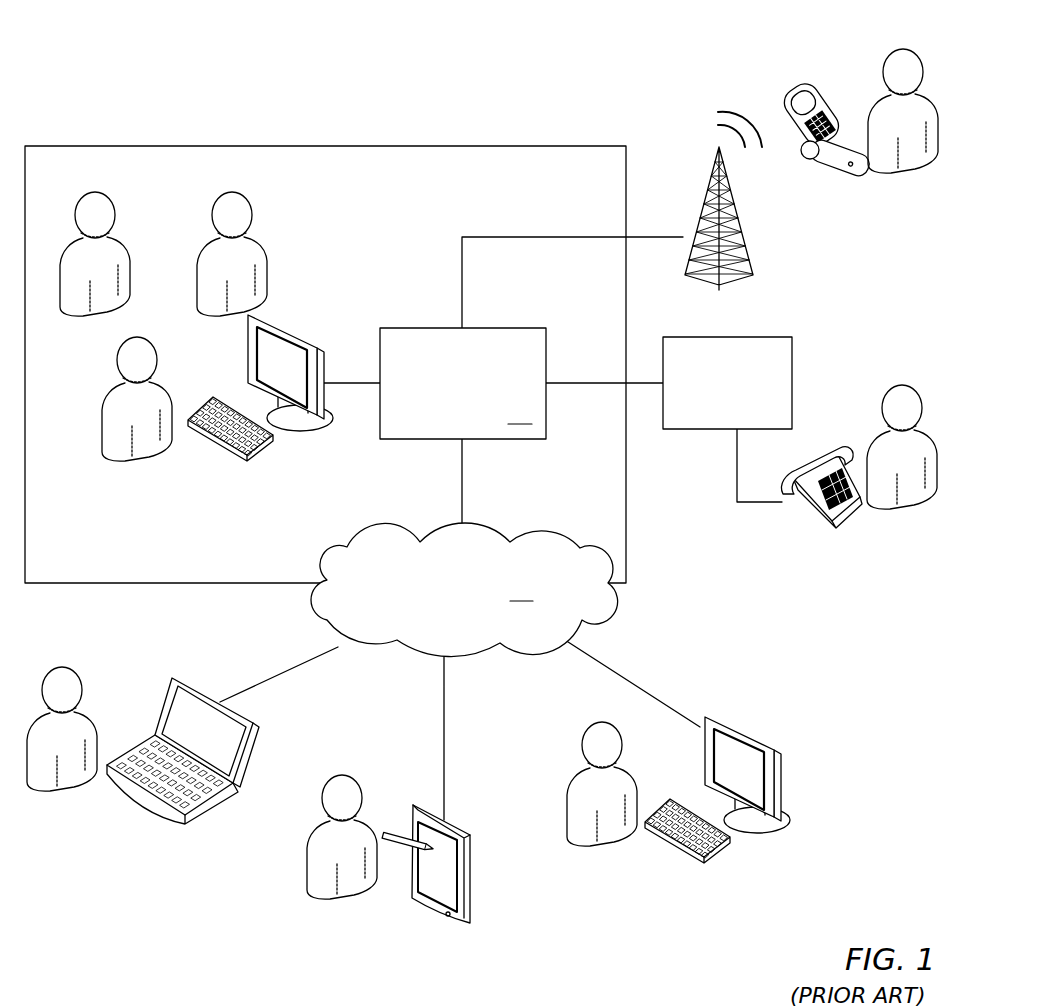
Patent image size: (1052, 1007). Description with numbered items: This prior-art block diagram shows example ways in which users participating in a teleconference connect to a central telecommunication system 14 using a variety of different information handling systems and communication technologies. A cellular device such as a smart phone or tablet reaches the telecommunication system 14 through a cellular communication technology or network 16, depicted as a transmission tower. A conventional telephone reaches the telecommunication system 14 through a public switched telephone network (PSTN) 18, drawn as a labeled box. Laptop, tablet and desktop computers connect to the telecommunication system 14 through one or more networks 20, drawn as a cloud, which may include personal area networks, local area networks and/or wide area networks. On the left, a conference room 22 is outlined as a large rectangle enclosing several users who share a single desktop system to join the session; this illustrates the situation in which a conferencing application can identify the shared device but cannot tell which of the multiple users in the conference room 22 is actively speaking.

The telecommunication system 14 is at (463, 383).
The cellular communication network 16 is at (694, 199).
The public switched telephone network (PSTN) 18 is at (746, 364).
The networks 20 is at (464, 590).
The conference room 22 is at (325, 346).